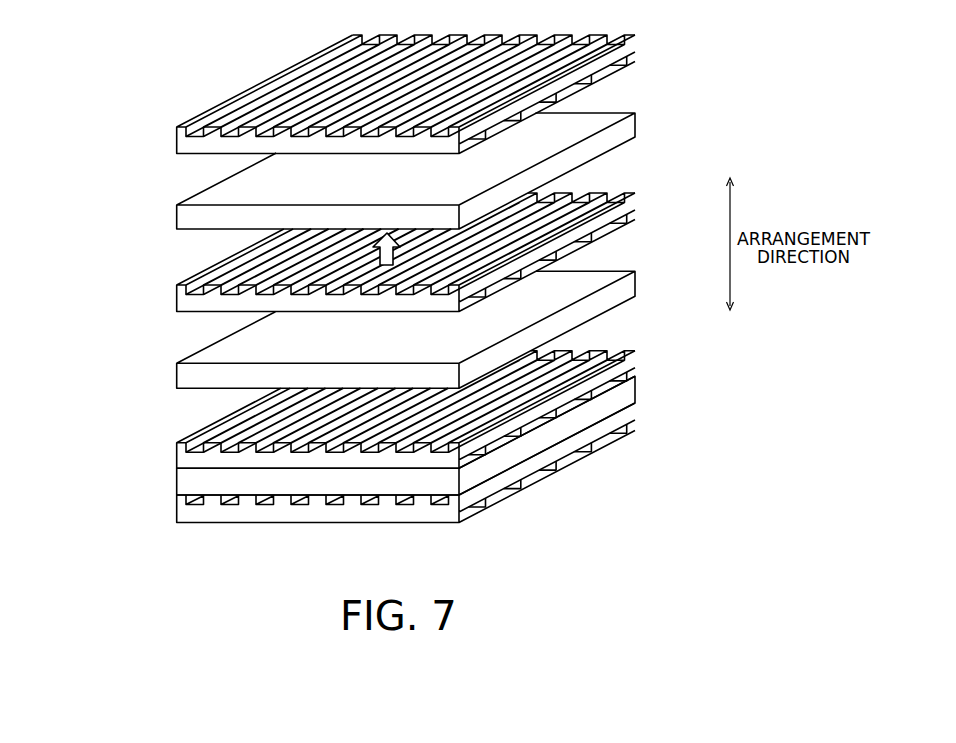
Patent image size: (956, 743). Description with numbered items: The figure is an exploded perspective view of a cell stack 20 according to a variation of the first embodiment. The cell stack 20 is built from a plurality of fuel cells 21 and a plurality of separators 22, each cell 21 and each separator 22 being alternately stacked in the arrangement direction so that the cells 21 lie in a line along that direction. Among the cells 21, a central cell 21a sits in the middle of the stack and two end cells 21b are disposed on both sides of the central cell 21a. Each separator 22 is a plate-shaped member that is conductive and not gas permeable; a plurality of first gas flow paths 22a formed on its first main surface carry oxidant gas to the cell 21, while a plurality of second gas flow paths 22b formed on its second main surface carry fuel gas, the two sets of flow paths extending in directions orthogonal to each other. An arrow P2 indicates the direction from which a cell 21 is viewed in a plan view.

The cell stack 20 is at (359, 271).
The fuel cell 21 is at (326, 307).
The central cell 21a is at (169, 378).
The end cell 21b is at (169, 222).
The separator 22 is at (169, 145).
The first gas flow path 22a is at (624, 70).
The second gas flow path 22b is at (618, 28).
The arrow P2 is at (377, 264).